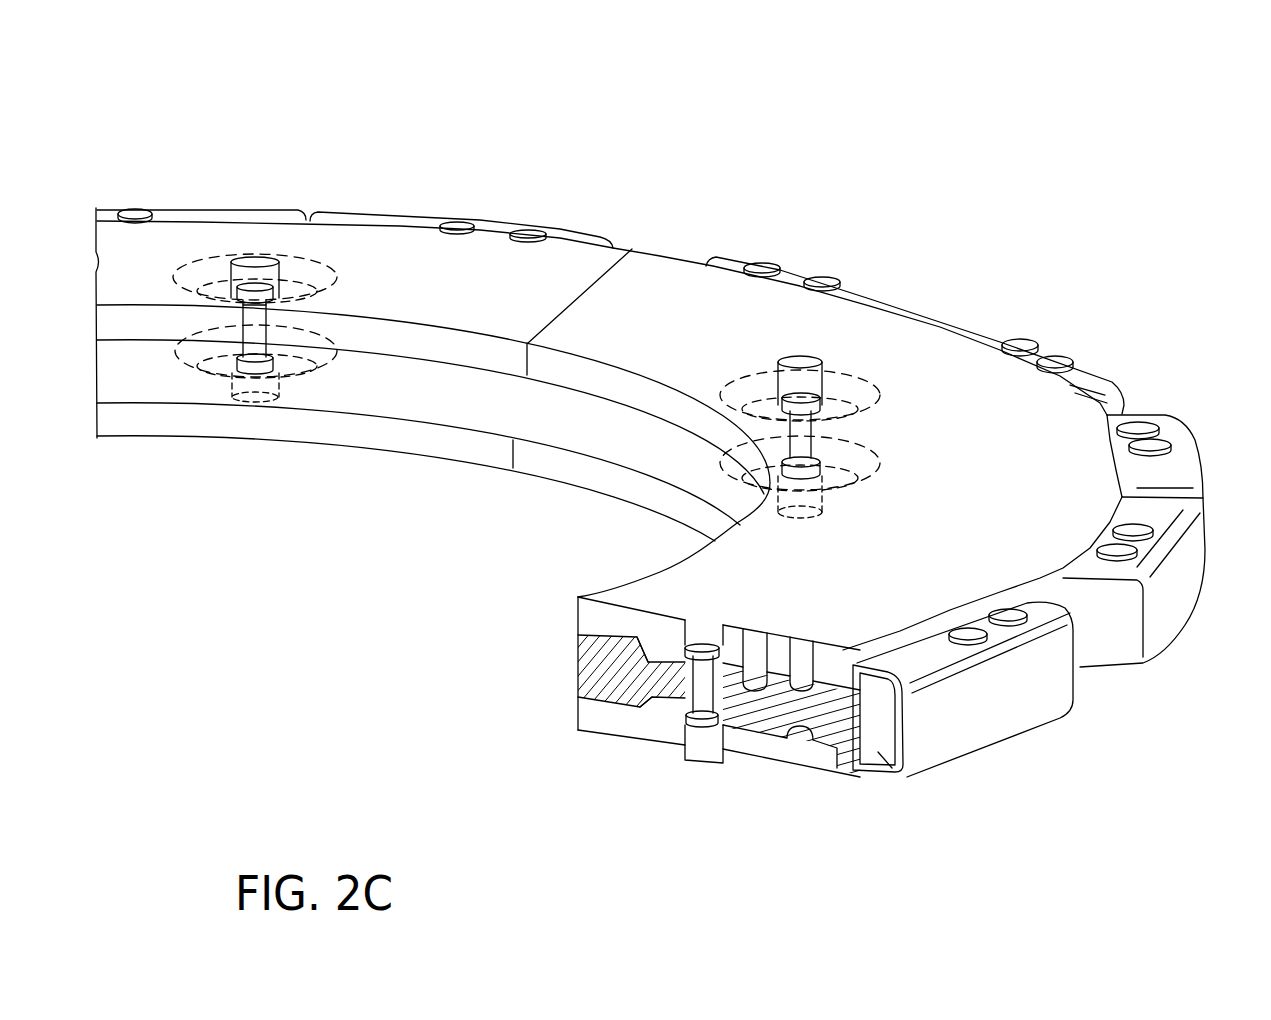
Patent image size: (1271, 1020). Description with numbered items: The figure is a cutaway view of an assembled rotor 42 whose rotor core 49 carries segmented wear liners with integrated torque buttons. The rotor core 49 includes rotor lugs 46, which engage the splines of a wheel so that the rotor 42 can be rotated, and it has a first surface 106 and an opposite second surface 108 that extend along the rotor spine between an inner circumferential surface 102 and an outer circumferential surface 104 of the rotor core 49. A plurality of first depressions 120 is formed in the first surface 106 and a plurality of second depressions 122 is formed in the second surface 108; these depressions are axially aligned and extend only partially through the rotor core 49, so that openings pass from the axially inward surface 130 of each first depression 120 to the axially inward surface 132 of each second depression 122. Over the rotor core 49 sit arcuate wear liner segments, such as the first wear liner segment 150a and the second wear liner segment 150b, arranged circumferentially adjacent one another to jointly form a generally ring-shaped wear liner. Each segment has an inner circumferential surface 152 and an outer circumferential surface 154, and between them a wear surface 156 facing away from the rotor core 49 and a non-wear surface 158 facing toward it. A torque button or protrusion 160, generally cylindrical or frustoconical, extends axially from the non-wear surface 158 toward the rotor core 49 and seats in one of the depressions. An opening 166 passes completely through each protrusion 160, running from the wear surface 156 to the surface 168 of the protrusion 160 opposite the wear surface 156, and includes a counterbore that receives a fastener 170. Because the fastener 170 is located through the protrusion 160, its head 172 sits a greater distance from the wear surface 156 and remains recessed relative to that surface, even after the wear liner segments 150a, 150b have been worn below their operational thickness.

The rotor 42 is at (441, 120).
The rotor lugs 46 is at (892, 777).
The rotor core 49 is at (390, 380).
The inner circumferential surface 102 is at (447, 402).
The outer circumferential surface 104 is at (1093, 603).
The first surface 106 is at (595, 637).
The second surface 108 is at (608, 707).
The first depressions 120 is at (526, 337).
The second depressions 122 is at (527, 408).
The axially inward surface of first depression 130 is at (666, 660).
The axially inward surface of second depression 132 is at (667, 720).
The first wear liner segment 150a is at (923, 337).
The second wear liner segment 150b is at (518, 280).
The inner circumferential surface 152 is at (617, 373).
The outer circumferential surface 154 is at (1027, 587).
The wear surface 156 is at (790, 322).
The non-wear surface 158 is at (800, 687).
The torque button 160 is at (727, 403).
The opening 166 is at (255, 242).
The surface of protrusion 168 is at (767, 687).
The fastener 170 is at (215, 298).
The head 172 is at (700, 646).